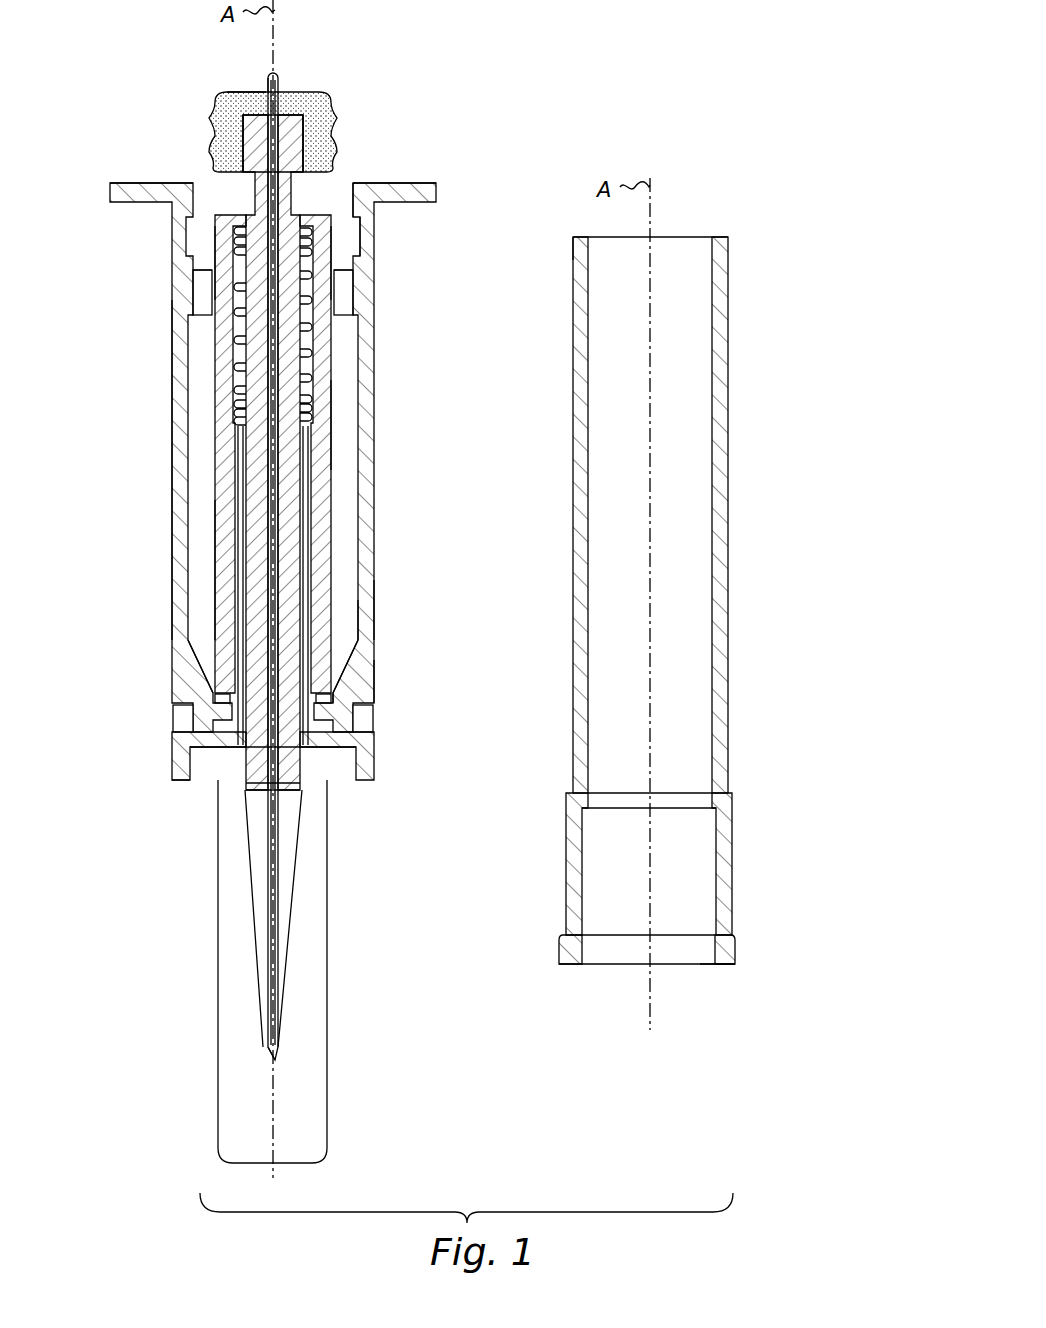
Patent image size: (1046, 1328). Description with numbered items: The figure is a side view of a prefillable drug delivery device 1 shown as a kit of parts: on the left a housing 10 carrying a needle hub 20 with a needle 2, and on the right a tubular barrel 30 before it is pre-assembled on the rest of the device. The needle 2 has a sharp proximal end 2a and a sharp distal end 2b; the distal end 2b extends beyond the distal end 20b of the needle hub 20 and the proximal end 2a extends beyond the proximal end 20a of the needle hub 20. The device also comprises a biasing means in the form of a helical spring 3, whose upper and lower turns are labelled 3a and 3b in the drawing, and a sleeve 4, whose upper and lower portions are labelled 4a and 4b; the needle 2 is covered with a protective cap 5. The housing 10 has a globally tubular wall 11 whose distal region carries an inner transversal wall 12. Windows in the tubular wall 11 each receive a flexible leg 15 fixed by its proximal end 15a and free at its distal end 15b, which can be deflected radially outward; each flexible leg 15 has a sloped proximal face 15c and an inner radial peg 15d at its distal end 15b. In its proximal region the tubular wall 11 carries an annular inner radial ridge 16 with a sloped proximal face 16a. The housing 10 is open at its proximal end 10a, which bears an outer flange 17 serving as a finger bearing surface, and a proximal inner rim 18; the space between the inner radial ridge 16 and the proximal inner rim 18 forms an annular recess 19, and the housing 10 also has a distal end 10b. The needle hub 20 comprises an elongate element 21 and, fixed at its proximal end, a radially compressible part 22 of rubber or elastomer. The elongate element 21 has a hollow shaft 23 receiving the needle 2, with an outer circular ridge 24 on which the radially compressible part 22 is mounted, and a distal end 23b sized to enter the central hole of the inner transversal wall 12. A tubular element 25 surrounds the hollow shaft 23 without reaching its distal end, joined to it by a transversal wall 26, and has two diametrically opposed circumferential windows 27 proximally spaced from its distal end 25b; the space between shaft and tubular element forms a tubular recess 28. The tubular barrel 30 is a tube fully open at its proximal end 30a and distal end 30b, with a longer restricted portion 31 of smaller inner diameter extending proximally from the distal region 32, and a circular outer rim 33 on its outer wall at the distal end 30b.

The prefillable drug delivery device 1 is at (498, 82).
The needle 2 is at (275, 805).
The sharp proximal end of the needle 2a is at (275, 75).
The sharp distal end of the needle 2b is at (273, 1060).
The helical spring 3 is at (305, 320).
The upper thread portion of needle holder 3a is at (233, 230).
The lower thread portion of needle holder 3b is at (240, 405).
The sleeve 4 is at (320, 520).
The annular slot of inner sleeve 4a is at (240, 445).
The distal end of inner sleeve 4b is at (240, 735).
The protective cap 5 is at (330, 1000).
The housing 10 is at (160, 520).
The proximal end of the housing 10a is at (427, 162).
The distal end of housing 10b is at (165, 795).
The tubular wall 11 is at (377, 467).
The inner transversal wall 12 is at (205, 790).
The flexible leg 15 is at (378, 662).
The proximal end of the flexible leg 15a is at (368, 620).
The distal end of the flexible leg 15b is at (365, 690).
The sloped proximal face 15c is at (368, 610).
The inner radial peg 15d is at (340, 700).
The inner radial ridge 16 is at (207, 313).
The sloped proximal face of the inner radial ridge 16a is at (190, 256).
The outer flange 17 is at (110, 186).
The proximal inner rim 18 is at (347, 192).
The annular recess 19 is at (345, 226).
The needle hub 20 is at (330, 413).
The proximal end of the needle hub 20a is at (228, 80).
The distal end of the needle hub 20b is at (243, 805).
The elongate element 21 is at (330, 445).
The radially compressible part 22 is at (213, 137).
The hollow shaft 23 is at (287, 262).
The distal end of the hollow shaft 23b is at (290, 795).
The outer circular ridge 24 is at (300, 128).
The tubular element 25 is at (222, 570).
The distal end of the tubular element 25b is at (213, 718).
The transversal wall 26 is at (237, 225).
The circumferential window 27 is at (215, 695).
The tubular recess 28 is at (305, 375).
The tubular barrel 30 is at (700, 593).
The proximal end of the tubular barrel 30a is at (690, 212).
The distal end of the tubular barrel 30b is at (697, 988).
The restricted portion 31 is at (728, 395).
The distal region 32 is at (732, 870).
The circular outer rim 33 is at (735, 945).